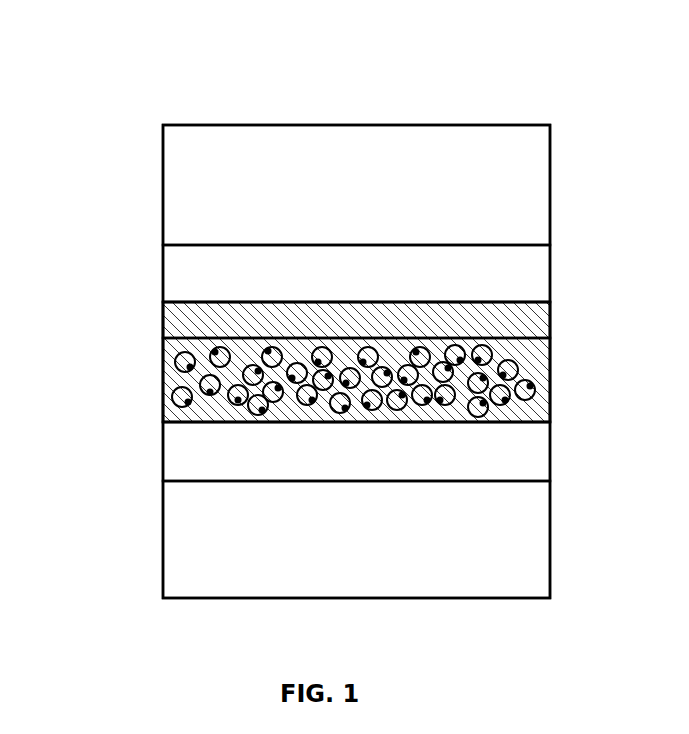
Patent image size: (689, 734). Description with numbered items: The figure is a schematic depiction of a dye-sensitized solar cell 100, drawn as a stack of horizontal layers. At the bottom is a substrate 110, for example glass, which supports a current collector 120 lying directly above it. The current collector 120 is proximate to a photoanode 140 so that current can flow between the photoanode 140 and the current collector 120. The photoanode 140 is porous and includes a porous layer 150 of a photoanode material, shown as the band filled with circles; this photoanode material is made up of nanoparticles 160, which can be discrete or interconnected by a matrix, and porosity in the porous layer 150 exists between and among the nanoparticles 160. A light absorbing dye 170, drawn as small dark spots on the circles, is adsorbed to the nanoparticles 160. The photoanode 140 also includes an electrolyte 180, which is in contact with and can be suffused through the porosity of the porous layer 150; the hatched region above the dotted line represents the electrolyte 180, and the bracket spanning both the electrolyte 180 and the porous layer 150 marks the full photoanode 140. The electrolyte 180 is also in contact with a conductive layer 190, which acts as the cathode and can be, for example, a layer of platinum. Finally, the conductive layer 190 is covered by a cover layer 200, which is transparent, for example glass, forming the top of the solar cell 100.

The solar cell 100 is at (277, 87).
The substrate 110 is at (505, 565).
The current collector 120 is at (512, 462).
The photoanode 140 is at (92, 418).
The porous layer 150 is at (152, 340).
The nanoparticles 160 is at (533, 383).
The light absorbing dye 170 is at (238, 400).
The electrolyte 180 is at (538, 308).
The conductive layer 190 is at (513, 263).
The cover layer 200 is at (503, 212).